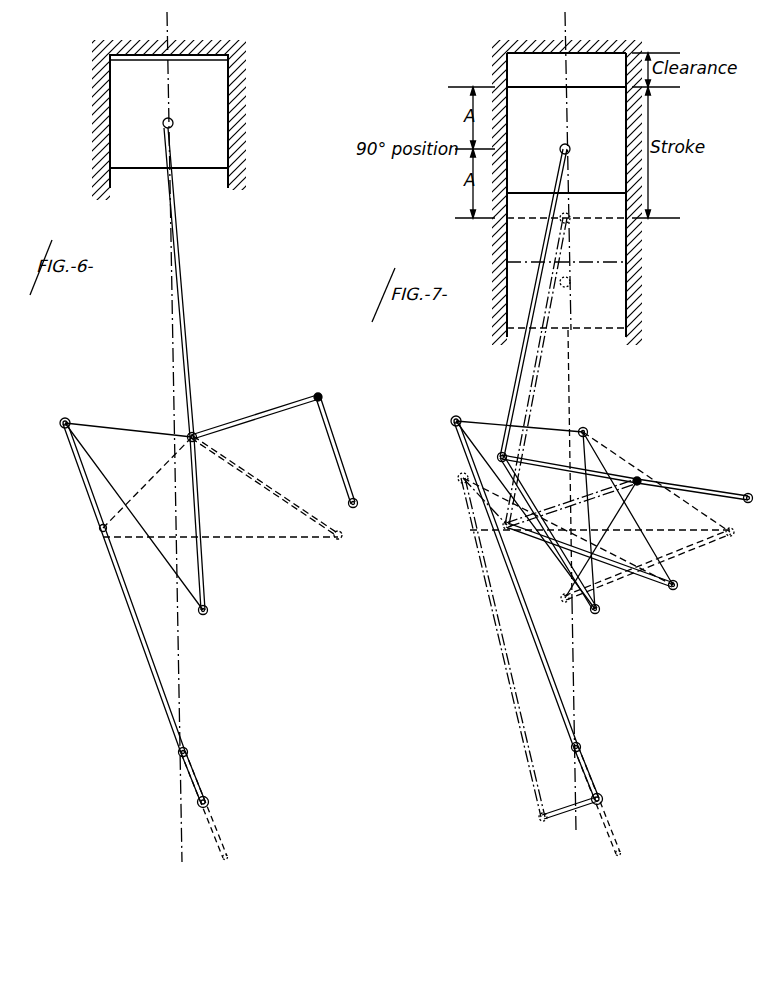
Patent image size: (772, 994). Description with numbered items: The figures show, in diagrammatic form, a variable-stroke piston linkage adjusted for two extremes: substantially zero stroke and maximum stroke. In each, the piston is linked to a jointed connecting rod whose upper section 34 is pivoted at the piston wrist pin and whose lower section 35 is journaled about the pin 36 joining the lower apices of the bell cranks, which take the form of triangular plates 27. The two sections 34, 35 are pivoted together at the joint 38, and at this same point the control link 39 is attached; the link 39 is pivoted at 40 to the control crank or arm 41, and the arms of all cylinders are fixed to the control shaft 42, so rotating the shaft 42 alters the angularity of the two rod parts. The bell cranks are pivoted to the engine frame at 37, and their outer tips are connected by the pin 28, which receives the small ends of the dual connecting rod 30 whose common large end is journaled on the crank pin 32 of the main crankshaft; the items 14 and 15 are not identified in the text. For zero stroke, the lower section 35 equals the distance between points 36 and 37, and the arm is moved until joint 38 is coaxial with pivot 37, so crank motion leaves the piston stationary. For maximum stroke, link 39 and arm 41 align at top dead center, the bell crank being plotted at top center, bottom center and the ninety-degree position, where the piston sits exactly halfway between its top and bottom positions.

In FIG. 6, the piston 14 is at (205, 160).
In FIG. 7, the piston 14 is at (599, 183).
In FIG. 6, the crank shaft 15 is at (208, 795).
In FIG. 7, the crank shaft 15 is at (602, 795).
In FIG. 6, the triangular plates 27 is at (117, 417).
In FIG. 7, the triangular plates 27 is at (492, 422).
In FIG. 6, the pin 28 is at (60, 425).
In FIG. 7, the pin 28 is at (453, 428).
In FIG. 6, the dual connecting rod 30 is at (140, 635).
In FIG. 7, the dual connecting rod 30 is at (545, 665).
In FIG. 6, the crank pin 32 is at (188, 747).
In FIG. 7, the crank pin 32 is at (580, 743).
In FIG. 6, the upper section of jointed connecting rod 34 is at (187, 285).
In FIG. 7, the upper section of jointed connecting rod 34 is at (540, 374).
In FIG. 6, the lower section of jointed connecting rod 35 is at (193, 480).
In FIG. 7, the lower section of jointed connecting rod 35 is at (552, 550).
In FIG. 6, the pin 36 is at (206, 614).
In FIG. 7, the pin 36 is at (600, 612).
In FIG. 7, the bell crank pivot 37 is at (588, 430).
In FIG. 6, the joint 38 is at (196, 432).
In FIG. 7, the joint 38 is at (500, 455).
In FIG. 6, the control link 39 is at (270, 415).
In FIG. 7, the control link 39 is at (608, 515).
In FIG. 6, the pivot 40 is at (320, 393).
In FIG. 7, the pivot 40 is at (640, 478).
In FIG. 6, the control crank or arm 41 is at (346, 450).
In FIG. 7, the control crank or arm 41 is at (692, 490).
In FIG. 6, the control shaft 42 is at (358, 503).
In FIG. 7, the control shaft 42 is at (748, 492).